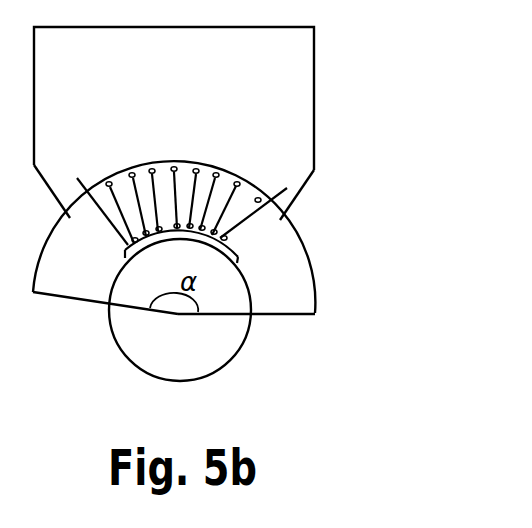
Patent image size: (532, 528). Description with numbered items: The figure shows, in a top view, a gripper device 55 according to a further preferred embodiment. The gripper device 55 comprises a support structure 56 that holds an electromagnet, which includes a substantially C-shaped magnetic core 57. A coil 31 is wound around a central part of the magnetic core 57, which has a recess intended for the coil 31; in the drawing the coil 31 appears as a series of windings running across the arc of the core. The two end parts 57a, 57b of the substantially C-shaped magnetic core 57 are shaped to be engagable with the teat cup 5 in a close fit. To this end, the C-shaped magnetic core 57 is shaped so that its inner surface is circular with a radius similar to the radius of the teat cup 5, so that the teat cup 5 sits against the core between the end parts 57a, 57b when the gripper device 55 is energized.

The teat cup 5 is at (220, 367).
The coil 31 is at (150, 170).
The gripper device 55 is at (343, 279).
The support structure 56 is at (314, 68).
The substantially C-shaped magnetic core 57 is at (292, 233).
The end part of the magnetic core 57a is at (90, 292).
The end part of the magnetic core 57b is at (270, 307).